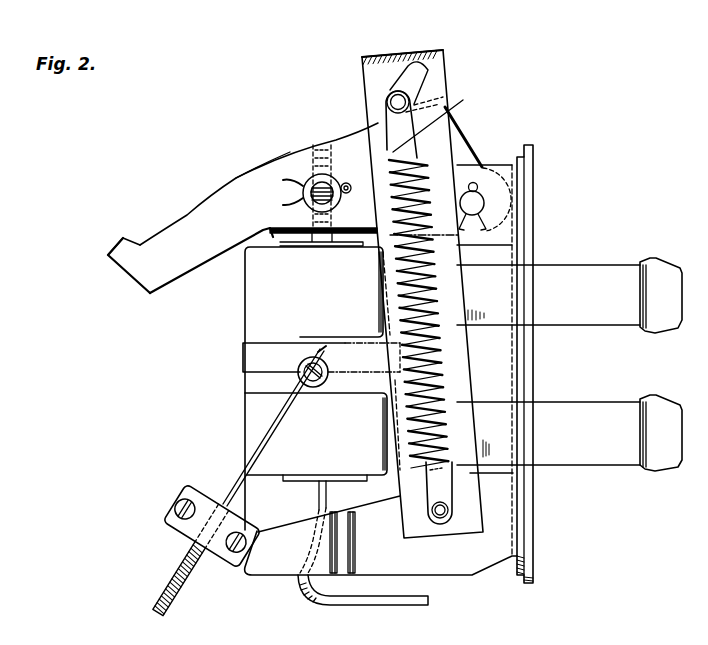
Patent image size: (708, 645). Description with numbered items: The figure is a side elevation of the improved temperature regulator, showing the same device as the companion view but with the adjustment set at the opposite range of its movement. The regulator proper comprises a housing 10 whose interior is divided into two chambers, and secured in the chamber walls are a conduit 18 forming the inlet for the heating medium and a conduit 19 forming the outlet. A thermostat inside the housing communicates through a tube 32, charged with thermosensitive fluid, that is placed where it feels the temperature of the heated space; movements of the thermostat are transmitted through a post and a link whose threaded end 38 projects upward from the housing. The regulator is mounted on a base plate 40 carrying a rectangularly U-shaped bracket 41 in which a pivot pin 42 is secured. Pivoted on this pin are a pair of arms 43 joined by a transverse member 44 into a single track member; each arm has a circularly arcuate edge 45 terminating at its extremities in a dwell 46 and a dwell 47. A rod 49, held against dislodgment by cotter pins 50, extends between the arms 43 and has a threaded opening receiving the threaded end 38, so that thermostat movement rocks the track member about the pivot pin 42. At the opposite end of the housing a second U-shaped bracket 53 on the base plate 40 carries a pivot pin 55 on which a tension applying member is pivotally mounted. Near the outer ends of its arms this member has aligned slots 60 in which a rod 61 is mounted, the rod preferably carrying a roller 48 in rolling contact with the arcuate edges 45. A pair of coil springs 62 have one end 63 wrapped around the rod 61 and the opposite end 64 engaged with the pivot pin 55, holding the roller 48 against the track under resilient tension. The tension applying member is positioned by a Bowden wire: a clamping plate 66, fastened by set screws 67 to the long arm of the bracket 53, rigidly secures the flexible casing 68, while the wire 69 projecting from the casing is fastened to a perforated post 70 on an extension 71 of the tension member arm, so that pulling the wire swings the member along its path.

The housing 10 is at (245, 405).
The conduit 18 is at (568, 282).
The conduit 19 is at (592, 452).
The tube 32 is at (362, 602).
The threaded end of link 38 is at (314, 147).
The base plate 40 is at (528, 377).
The U-shaped bracket 41 is at (505, 153).
The pivot pin 42 is at (483, 200).
The arm 43 is at (249, 177).
The transverse member 44 is at (339, 237).
The arcuate edge 45 is at (205, 200).
The dwell 46 is at (142, 245).
The dwell 47 is at (445, 92).
The roller 48 is at (438, 56).
The rod 49 is at (336, 174).
The cotter pin 50 is at (349, 183).
The second U-shaped bracket 53 is at (462, 565).
The pivot pin 55 is at (432, 516).
The slot 60 is at (403, 72).
The rod 61 is at (388, 96).
The coil spring 62 is at (440, 310).
The spring end 63 is at (439, 129).
The spring end 64 is at (423, 490).
The clamping plate 66 is at (200, 500).
The set screws 67 is at (232, 555).
The flexible casing 68 is at (168, 573).
The wire 69 is at (275, 434).
The perforated post 70 is at (301, 362).
The extension 71 is at (340, 348).